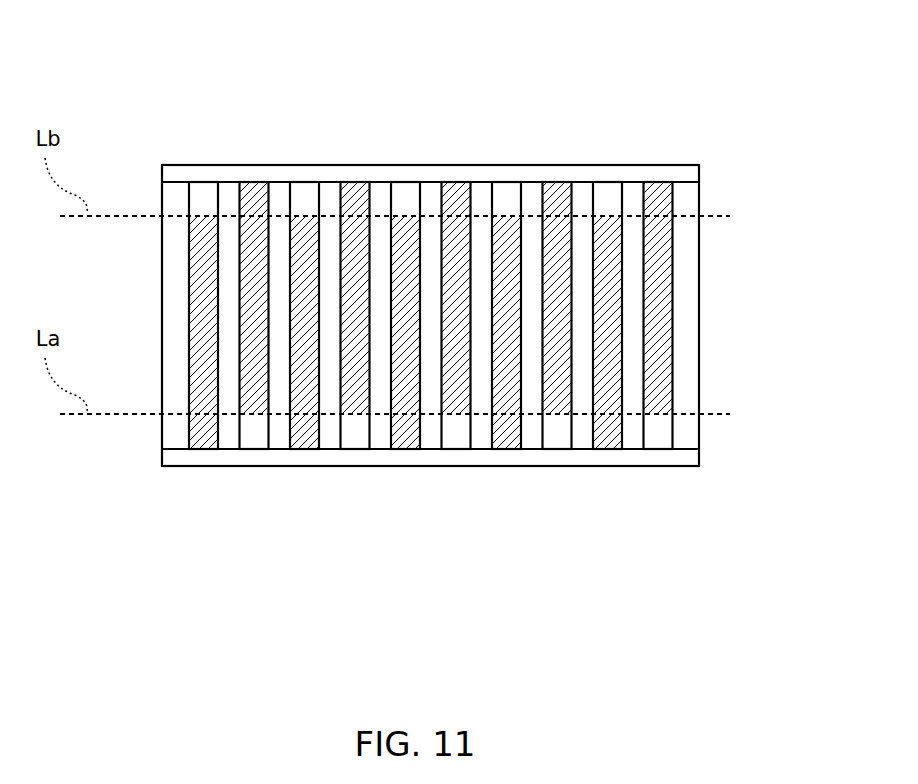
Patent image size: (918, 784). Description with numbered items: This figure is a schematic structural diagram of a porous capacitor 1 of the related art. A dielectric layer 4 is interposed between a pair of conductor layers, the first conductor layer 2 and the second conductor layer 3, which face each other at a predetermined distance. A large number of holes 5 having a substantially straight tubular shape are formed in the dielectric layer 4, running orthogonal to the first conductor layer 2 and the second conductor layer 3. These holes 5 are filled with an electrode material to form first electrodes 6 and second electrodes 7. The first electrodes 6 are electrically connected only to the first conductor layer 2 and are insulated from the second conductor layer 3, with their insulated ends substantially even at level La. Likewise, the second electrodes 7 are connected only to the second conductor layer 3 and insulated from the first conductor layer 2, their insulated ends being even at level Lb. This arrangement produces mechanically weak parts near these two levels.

The porous capacitor 1 is at (728, 112).
The first conductor layer 2 is at (701, 172).
The second conductor layer 3 is at (700, 460).
The dielectric layer 4 is at (700, 283).
The holes 5 is at (198, 326).
The first electrodes 6 is at (259, 250).
The second electrodes 7 is at (207, 247).